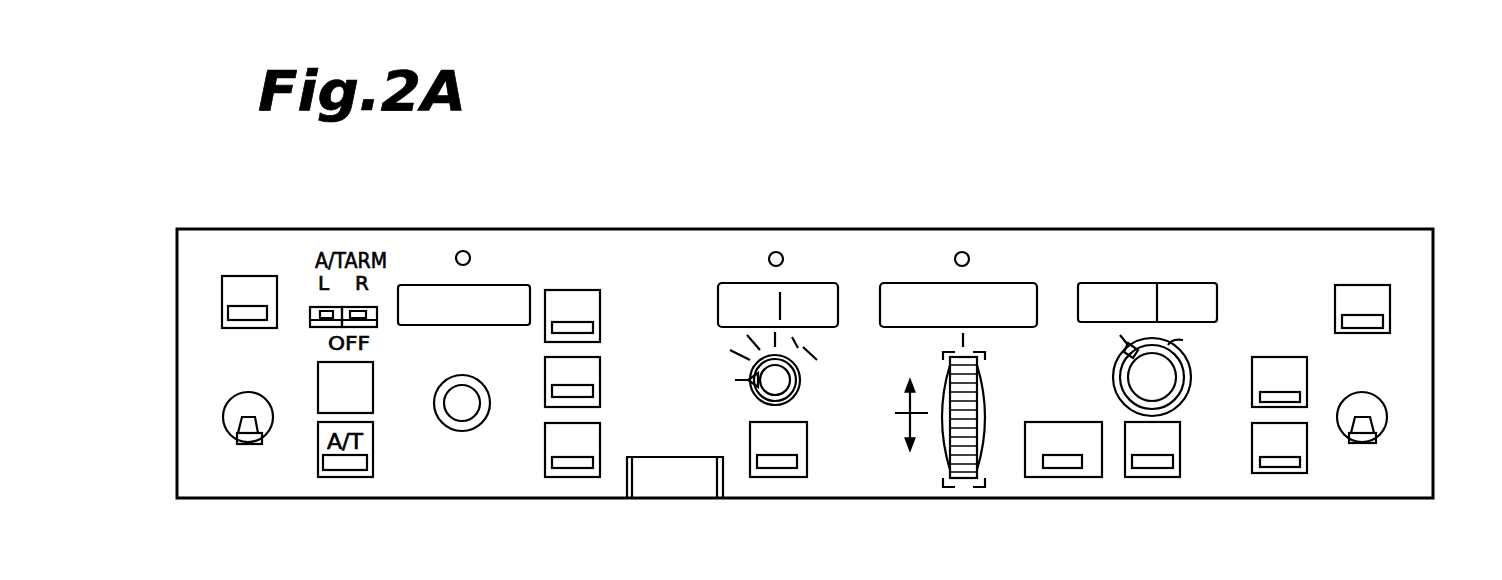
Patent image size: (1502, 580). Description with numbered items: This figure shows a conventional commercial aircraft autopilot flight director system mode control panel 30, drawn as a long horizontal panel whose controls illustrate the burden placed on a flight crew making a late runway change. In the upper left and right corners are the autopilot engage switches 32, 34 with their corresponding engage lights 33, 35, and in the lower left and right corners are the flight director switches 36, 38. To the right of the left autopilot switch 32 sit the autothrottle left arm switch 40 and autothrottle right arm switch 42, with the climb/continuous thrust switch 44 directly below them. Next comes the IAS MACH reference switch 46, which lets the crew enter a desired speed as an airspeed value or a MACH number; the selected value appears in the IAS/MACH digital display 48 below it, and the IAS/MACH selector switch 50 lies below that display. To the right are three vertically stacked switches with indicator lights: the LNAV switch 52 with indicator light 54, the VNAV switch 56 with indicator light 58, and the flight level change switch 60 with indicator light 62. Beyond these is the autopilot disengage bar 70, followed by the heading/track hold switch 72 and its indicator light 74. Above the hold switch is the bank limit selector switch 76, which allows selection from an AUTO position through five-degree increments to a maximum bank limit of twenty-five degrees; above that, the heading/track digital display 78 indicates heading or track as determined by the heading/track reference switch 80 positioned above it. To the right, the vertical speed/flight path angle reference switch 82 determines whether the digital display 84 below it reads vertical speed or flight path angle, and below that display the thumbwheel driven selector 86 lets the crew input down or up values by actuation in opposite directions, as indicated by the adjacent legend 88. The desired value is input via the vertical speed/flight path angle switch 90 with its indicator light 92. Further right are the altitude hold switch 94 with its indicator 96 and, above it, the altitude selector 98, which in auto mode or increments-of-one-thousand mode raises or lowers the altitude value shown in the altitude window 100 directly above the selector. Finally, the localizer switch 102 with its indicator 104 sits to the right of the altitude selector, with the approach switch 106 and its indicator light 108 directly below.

The autopilot flight director system mode control panel 30 is at (177, 393).
The autopilot engage switch 32 is at (222, 297).
The engage light 33 is at (227, 315).
The autopilot engage switch 34 is at (1390, 292).
The engage light 35 is at (1383, 318).
The flight director switch 36 is at (228, 410).
The flight director switch 38 is at (1380, 420).
The autothrottle left arm switch 40 is at (318, 307).
The autothrottle right arm switch 42 is at (375, 307).
The climb/continuous thrust switch 44 is at (373, 400).
The IAS MACH reference switch 46 is at (464, 250).
The IAS/MACH digital display 48 is at (528, 284).
The IAS/MACH selector switch 50 is at (480, 427).
The LNAV switch 52 is at (578, 290).
The indicator light 54 is at (600, 320).
The VNAV switch 56 is at (600, 357).
The indicator light 58 is at (598, 385).
The flight level change switch 60 is at (600, 447).
The indicator light 62 is at (583, 463).
The autopilot disengage bar 70 is at (703, 480).
The heading/track hold switch 72 is at (807, 448).
The indicator light 74 is at (797, 466).
The bank limit selector switch 76 is at (787, 397).
The heading/track digital display 78 is at (718, 283).
The heading/track reference switch 80 is at (778, 253).
The vertical speed/flight path angle reference switch 82 is at (963, 253).
The vertical speed/flight path angle digital display 84 is at (1034, 283).
The vertical speed/flight path angle selector 86 is at (963, 482).
The legend 88 is at (896, 414).
The vertical speed/flight path angle switch 90 is at (1102, 447).
The indicator light 92 is at (1047, 466).
The altitude hold switch 94 is at (1180, 447).
The indicator 96 is at (1148, 463).
The altitude selector 98 is at (1203, 353).
The altitude window 100 is at (1205, 283).
The localizer switch 102 is at (1275, 357).
The indicator 104 is at (1300, 393).
The approach switch 106 is at (1307, 447).
The indicator light 108 is at (1307, 465).